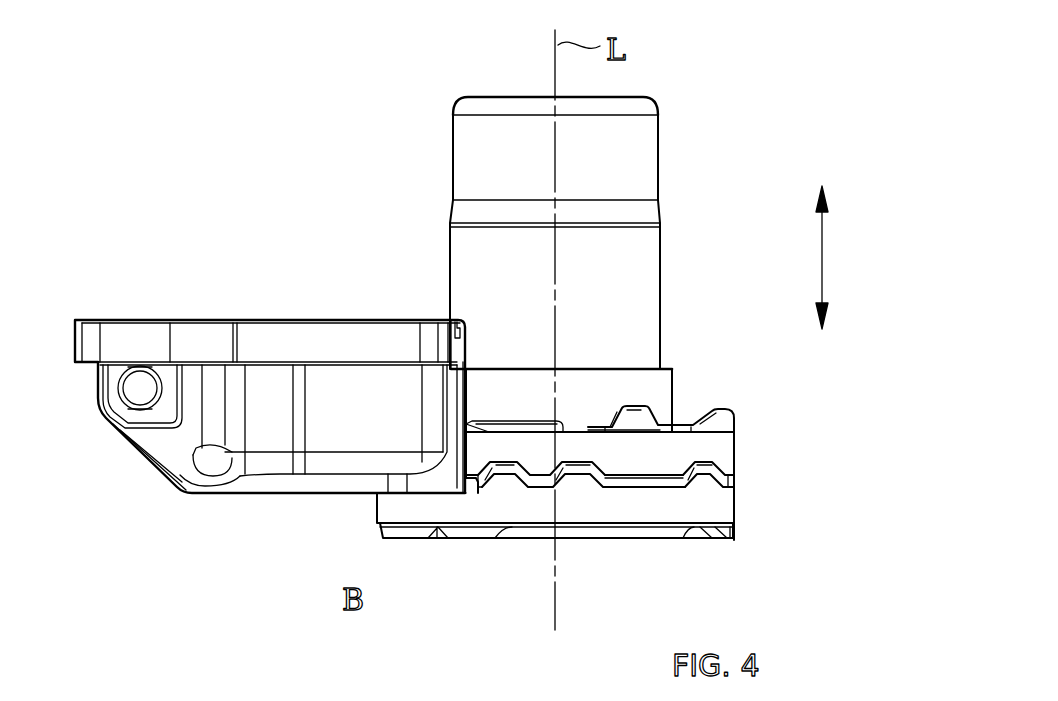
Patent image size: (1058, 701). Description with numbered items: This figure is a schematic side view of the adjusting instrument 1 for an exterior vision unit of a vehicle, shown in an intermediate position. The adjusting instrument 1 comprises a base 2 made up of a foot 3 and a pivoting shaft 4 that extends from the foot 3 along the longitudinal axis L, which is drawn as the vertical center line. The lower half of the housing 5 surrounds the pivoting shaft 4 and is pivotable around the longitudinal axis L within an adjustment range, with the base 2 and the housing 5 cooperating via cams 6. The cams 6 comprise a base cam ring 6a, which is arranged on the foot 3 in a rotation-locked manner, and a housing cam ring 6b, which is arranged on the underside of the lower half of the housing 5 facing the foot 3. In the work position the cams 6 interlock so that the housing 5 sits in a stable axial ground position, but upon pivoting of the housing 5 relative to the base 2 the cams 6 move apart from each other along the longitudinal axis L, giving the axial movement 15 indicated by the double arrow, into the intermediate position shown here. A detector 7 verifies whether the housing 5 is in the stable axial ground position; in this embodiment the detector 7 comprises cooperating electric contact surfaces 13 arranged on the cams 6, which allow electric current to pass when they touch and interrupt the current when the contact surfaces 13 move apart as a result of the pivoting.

The adjusting instrument 1 is at (228, 204).
The base 2 is at (688, 305).
The foot 3 is at (578, 530).
The pivoting shaft 4 is at (640, 268).
The housing 5 is at (130, 504).
The cams 6 is at (633, 539).
The base cam ring 6a is at (697, 513).
The housing cam ring 6b is at (722, 490).
The detector 7 is at (612, 480).
The contact surfaces 13 is at (645, 481).
The axial movement 15 is at (822, 255).